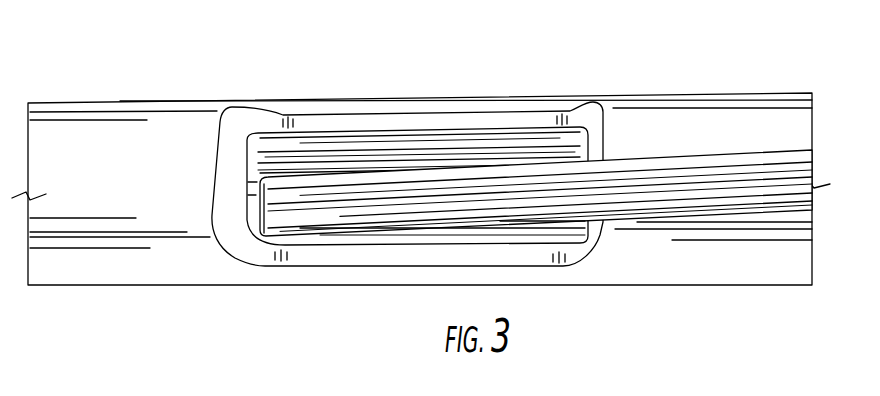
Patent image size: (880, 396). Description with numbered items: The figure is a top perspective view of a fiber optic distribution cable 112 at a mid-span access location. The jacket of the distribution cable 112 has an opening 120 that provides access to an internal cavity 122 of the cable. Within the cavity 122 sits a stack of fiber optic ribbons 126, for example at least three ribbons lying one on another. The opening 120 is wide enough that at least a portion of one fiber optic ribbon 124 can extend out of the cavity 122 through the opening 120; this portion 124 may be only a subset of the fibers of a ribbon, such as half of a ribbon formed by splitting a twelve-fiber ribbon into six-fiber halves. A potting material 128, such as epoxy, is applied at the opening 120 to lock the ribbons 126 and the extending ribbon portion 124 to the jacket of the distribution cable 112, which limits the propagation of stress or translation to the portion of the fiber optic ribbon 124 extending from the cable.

The distribution cable 112 is at (167, 126).
The opening 120 is at (268, 153).
The internal cavity 122 is at (357, 117).
The portion of fiber optic ribbon 124 is at (772, 192).
The stack of fiber optic ribbons 126 is at (424, 157).
The potting material 128 is at (331, 197).